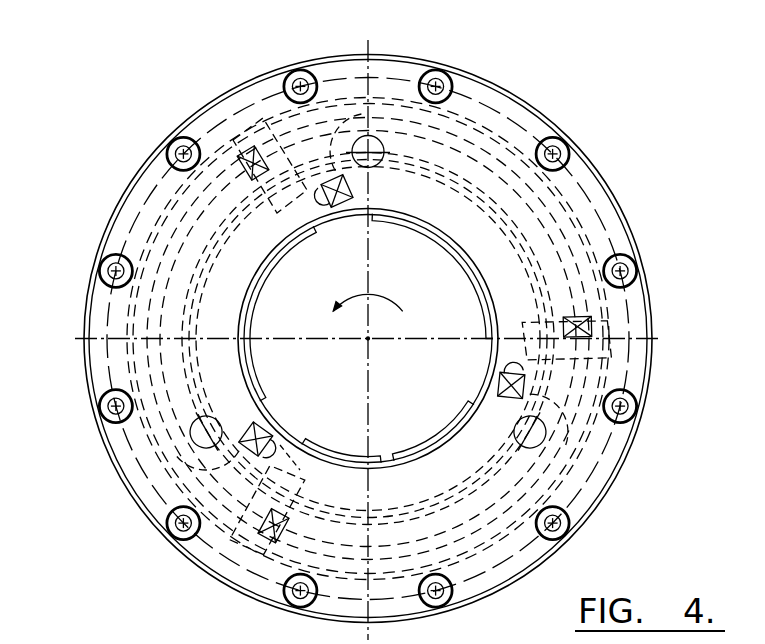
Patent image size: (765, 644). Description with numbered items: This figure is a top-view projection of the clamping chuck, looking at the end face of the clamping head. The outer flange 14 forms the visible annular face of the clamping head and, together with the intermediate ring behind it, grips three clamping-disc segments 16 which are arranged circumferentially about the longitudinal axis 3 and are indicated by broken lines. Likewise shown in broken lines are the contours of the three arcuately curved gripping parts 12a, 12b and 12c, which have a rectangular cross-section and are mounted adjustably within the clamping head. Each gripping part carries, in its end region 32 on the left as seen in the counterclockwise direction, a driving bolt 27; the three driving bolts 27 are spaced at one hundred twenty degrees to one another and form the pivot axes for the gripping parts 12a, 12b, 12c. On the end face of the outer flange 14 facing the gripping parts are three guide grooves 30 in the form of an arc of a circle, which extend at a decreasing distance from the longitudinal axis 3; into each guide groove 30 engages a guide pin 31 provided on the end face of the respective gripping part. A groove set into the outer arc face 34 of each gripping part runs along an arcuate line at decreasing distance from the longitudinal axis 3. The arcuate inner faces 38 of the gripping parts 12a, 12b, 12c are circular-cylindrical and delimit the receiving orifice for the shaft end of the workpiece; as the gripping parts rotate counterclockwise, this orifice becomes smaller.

The longitudinal axis 3 is at (370, 342).
The outer flange 14 is at (140, 199).
The gripping part 12a is at (487, 158).
The gripping part 12b is at (165, 325).
The gripping part 12c is at (472, 518).
The clamping-disc segment 16 is at (330, 118).
The driving bolt 27 is at (370, 147).
The guide groove 30 is at (427, 185).
The guide pin 31 is at (233, 167).
The end region 32 is at (325, 132).
The outer arc face 34 is at (292, 460).
The arcuate inner face 38 is at (257, 307).